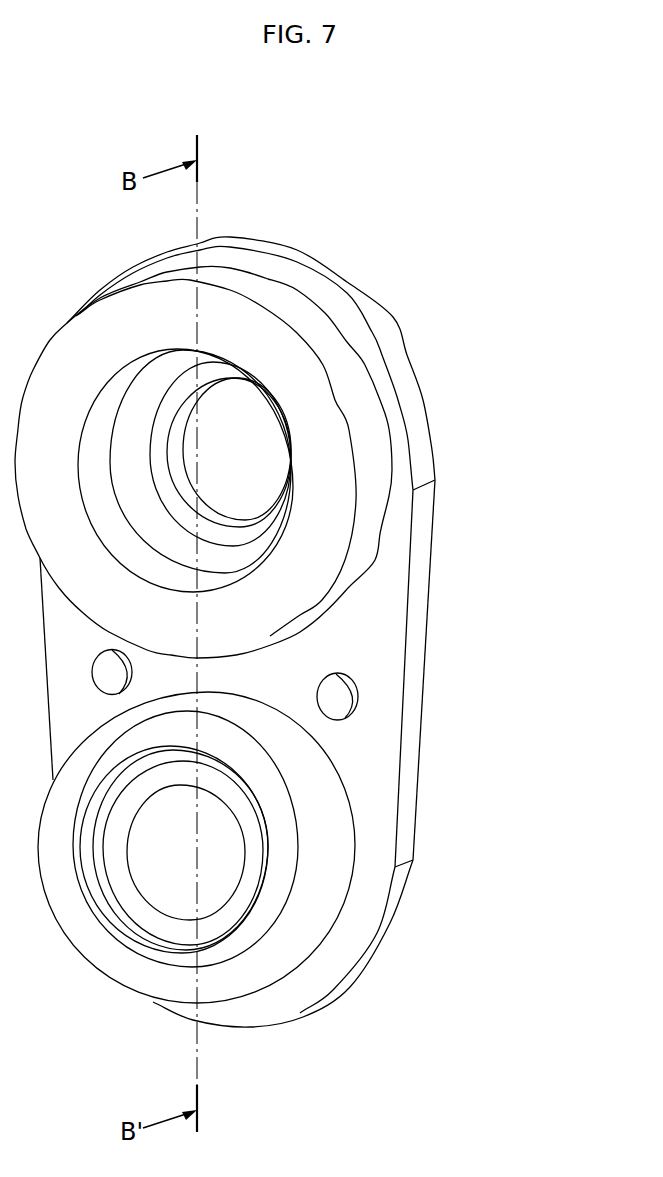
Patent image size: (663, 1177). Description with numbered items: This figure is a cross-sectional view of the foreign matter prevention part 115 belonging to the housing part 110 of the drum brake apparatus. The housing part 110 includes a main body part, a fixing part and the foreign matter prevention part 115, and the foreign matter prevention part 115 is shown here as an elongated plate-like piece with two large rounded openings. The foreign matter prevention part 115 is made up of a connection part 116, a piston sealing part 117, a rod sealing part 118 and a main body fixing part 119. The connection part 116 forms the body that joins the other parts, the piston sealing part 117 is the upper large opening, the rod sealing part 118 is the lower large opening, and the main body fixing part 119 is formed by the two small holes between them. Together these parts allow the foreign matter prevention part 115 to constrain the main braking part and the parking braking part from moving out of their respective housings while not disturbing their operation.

The housing part 110 is at (296, 613).
The foreign matter prevention part 115 is at (296, 613).
The connection part 116 is at (280, 665).
The piston sealing part 117 is at (327, 457).
The rod sealing part 118 is at (287, 880).
The main body fixing part 119 is at (347, 692).